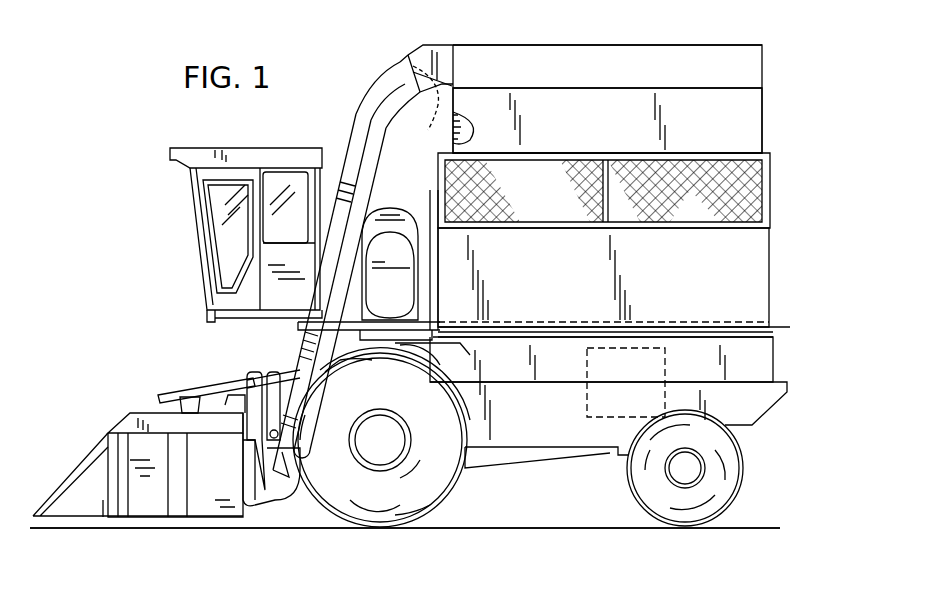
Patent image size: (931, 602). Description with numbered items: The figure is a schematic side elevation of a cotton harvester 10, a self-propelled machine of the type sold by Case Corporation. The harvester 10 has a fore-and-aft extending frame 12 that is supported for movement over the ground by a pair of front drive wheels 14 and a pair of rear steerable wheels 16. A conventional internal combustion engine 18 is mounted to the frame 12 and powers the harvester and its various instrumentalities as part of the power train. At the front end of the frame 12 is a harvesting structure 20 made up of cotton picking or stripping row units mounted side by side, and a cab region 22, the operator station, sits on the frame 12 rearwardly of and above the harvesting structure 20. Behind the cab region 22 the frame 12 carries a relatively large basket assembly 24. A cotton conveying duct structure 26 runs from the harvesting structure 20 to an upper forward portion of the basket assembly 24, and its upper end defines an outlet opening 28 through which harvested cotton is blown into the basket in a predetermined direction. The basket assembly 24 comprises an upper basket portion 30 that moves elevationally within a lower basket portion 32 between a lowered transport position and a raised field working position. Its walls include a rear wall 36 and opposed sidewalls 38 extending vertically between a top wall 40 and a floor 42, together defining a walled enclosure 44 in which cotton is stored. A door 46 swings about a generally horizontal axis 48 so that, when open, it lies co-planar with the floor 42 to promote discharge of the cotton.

The cotton harvester 10 is at (124, 232).
The frame 12 is at (520, 455).
The front drive wheels 14 is at (420, 475).
The rear steerable wheels 16 is at (735, 456).
The internal combustion engine 18 is at (587, 400).
The harvesting structure 20 is at (110, 420).
The cab region 22 is at (212, 200).
The basket assembly 24 is at (771, 90).
The duct structure 26 is at (355, 108).
The outlet opening 28 is at (428, 108).
The upper basket portion 30 is at (770, 132).
The lower basket portion 32 is at (776, 275).
The rear wall 36 is at (770, 205).
The sidewalls 38 is at (752, 175).
The top wall 40 is at (505, 45).
The floor 42 is at (680, 322).
The walled enclosure 44 is at (452, 140).
The door 46 is at (558, 280).
The horizontal axis 48 is at (778, 327).